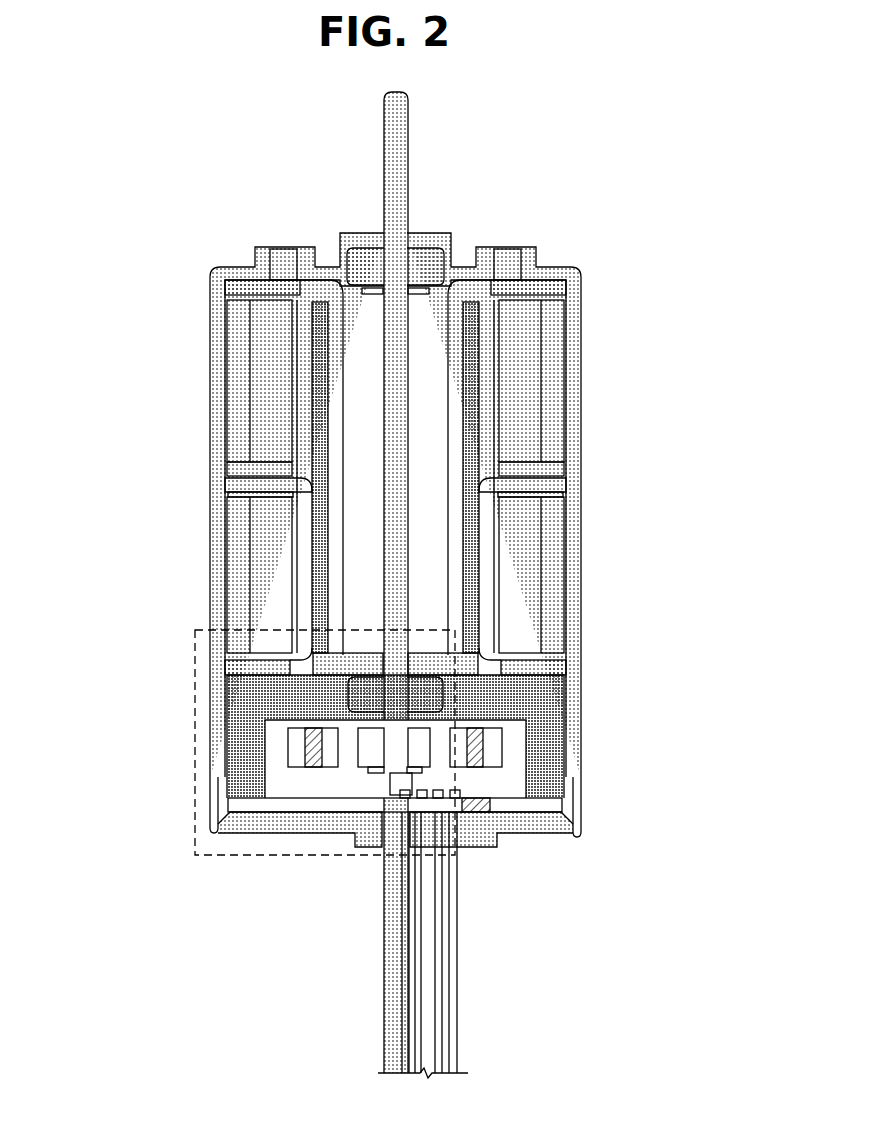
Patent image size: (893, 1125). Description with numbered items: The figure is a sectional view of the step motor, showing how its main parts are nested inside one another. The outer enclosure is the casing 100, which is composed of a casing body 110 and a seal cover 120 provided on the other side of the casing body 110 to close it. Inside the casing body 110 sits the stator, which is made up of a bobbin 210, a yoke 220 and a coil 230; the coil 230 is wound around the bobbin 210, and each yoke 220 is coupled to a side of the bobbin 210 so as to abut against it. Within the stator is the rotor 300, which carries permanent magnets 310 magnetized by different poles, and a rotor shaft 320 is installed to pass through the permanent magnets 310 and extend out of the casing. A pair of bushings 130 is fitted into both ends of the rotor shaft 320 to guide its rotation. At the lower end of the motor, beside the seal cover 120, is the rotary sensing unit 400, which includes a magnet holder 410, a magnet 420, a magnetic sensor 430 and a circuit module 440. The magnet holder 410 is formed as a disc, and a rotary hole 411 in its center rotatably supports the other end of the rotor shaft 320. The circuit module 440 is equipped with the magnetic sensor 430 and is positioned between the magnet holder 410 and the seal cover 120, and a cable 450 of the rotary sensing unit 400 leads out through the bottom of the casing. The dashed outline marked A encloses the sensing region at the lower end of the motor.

The casing 100 is at (671, 600).
The casing body 110 is at (574, 600).
The seal cover 120 is at (560, 828).
The bushings 130 is at (428, 268).
The bobbin 210 is at (248, 717).
The yoke 220 is at (555, 468).
The coil 230 is at (270, 592).
The rotor 300 is at (653, 162).
The permanent magnets 310 is at (470, 352).
The rotor shaft 320 is at (398, 160).
The rotary sensing unit 400 is at (281, 856).
The magnet holder 410 is at (497, 770).
The rotary hole 411 is at (305, 758).
The magnet 420 is at (313, 768).
The magnetic sensor 430 is at (475, 812).
The circuit module 440 is at (245, 808).
The cable 450 is at (436, 1030).
The enlarged region A is at (195, 855).